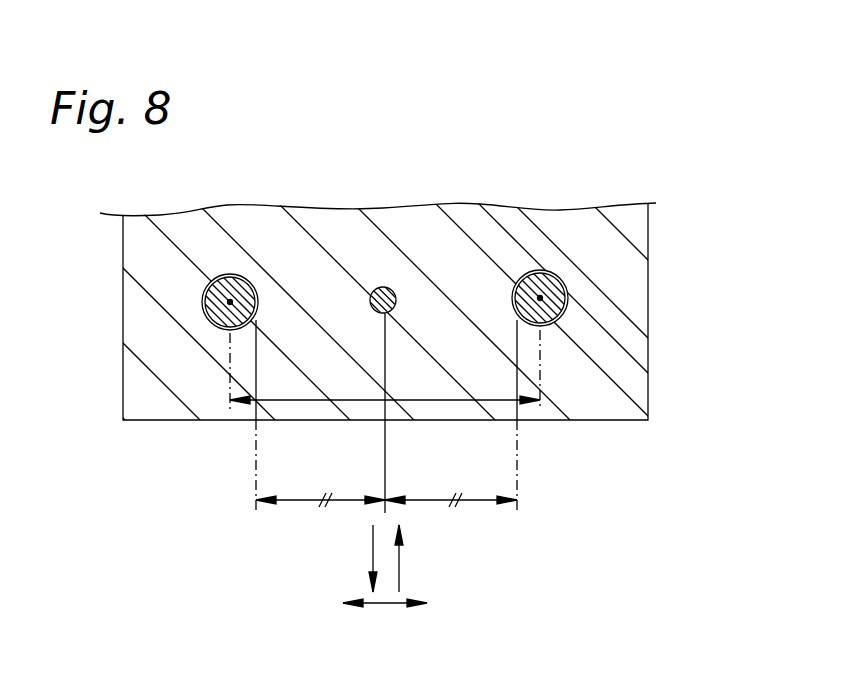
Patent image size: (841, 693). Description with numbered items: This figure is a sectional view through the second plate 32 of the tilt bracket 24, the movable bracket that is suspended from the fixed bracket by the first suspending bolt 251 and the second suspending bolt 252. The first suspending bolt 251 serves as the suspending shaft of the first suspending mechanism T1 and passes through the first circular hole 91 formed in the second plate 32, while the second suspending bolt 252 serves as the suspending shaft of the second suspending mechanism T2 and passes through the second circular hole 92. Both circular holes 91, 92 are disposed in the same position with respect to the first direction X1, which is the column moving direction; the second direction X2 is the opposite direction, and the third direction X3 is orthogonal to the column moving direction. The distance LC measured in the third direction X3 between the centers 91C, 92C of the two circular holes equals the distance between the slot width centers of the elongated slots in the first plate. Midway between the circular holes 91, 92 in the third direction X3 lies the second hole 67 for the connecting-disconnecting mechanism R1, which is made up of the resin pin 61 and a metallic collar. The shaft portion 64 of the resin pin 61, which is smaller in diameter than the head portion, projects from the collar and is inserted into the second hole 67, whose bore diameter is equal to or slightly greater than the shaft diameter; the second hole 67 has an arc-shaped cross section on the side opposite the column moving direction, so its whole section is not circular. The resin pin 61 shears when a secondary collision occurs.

The tilt bracket 24 is at (662, 287).
The second plate 32 is at (637, 230).
The first circular hole 91 is at (207, 312).
The second circular hole 92 is at (563, 316).
The center of first circular hole 91C is at (229, 305).
The center of second circular hole 92C is at (541, 302).
The shaft portion 64 is at (383, 286).
The resin pin 61 is at (398, 286).
The second hole 67 is at (377, 314).
The connecting-disconnecting mechanism R1 is at (363, 283).
The first suspending mechanism T1 is at (205, 265).
The second suspending mechanism T2 is at (515, 268).
The first suspending bolt 251 is at (245, 273).
The second suspending bolt 252 is at (553, 270).
The distance between centers of circular holes LC is at (447, 401).
The first direction X1 is at (399, 563).
The second direction X2 is at (373, 548).
The third direction X3 is at (386, 604).